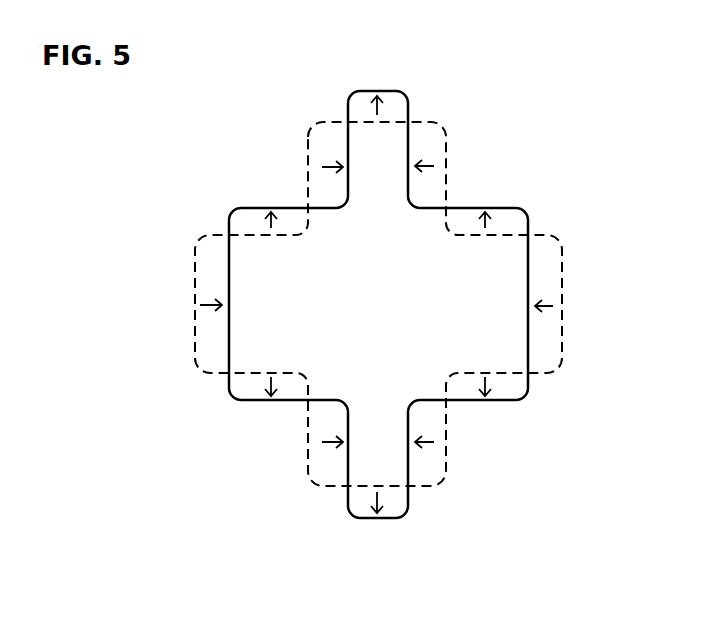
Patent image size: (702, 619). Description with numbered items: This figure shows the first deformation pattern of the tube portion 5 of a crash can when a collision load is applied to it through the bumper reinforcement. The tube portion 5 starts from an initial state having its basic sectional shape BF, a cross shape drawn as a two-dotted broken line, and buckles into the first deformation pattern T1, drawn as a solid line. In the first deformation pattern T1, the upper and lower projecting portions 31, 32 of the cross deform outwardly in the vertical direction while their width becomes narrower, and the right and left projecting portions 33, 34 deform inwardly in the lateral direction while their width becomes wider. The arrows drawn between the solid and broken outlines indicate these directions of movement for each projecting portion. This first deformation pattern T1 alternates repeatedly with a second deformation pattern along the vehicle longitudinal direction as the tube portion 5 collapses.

The tube portion 5 is at (418, 304).
The upper projecting portion 31 is at (440, 127).
The lower projecting portion 32 is at (431, 487).
The right projecting portion 33 is at (228, 262).
The left projecting portion 34 is at (529, 222).
The first deformation pattern T1 is at (529, 286).
The basic sectional shape BF is at (561, 345).